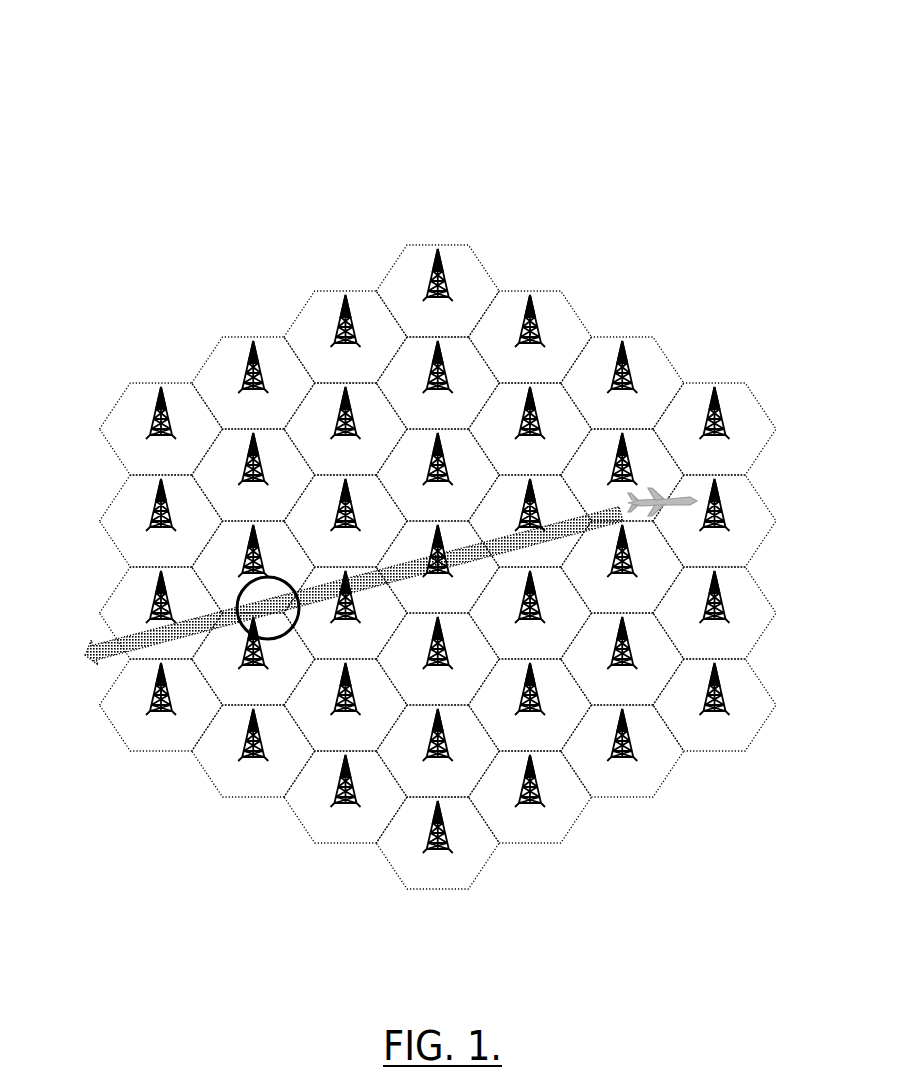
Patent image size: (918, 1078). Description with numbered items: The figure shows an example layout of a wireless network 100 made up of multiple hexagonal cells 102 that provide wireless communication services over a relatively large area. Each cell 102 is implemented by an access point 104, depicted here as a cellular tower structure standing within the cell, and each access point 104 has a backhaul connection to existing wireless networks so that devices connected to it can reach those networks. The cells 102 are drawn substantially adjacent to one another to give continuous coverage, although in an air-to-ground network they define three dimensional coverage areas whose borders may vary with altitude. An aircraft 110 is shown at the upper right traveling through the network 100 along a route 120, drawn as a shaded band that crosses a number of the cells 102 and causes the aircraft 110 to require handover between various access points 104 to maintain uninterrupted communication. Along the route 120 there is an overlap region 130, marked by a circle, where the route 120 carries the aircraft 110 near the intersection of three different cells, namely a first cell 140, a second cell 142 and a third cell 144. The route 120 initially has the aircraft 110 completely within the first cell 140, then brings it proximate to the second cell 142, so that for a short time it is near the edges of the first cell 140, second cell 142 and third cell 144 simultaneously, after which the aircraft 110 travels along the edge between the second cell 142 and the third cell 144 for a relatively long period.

The wireless network 100 is at (671, 118).
The cells 102 is at (438, 245).
The access points 104 is at (447, 282).
The aircraft 110 is at (665, 502).
The route 120 is at (130, 635).
The overlap region 130 is at (238, 590).
The first cell 140 is at (381, 654).
The second cell 142 is at (303, 548).
The third cell 144 is at (293, 703).